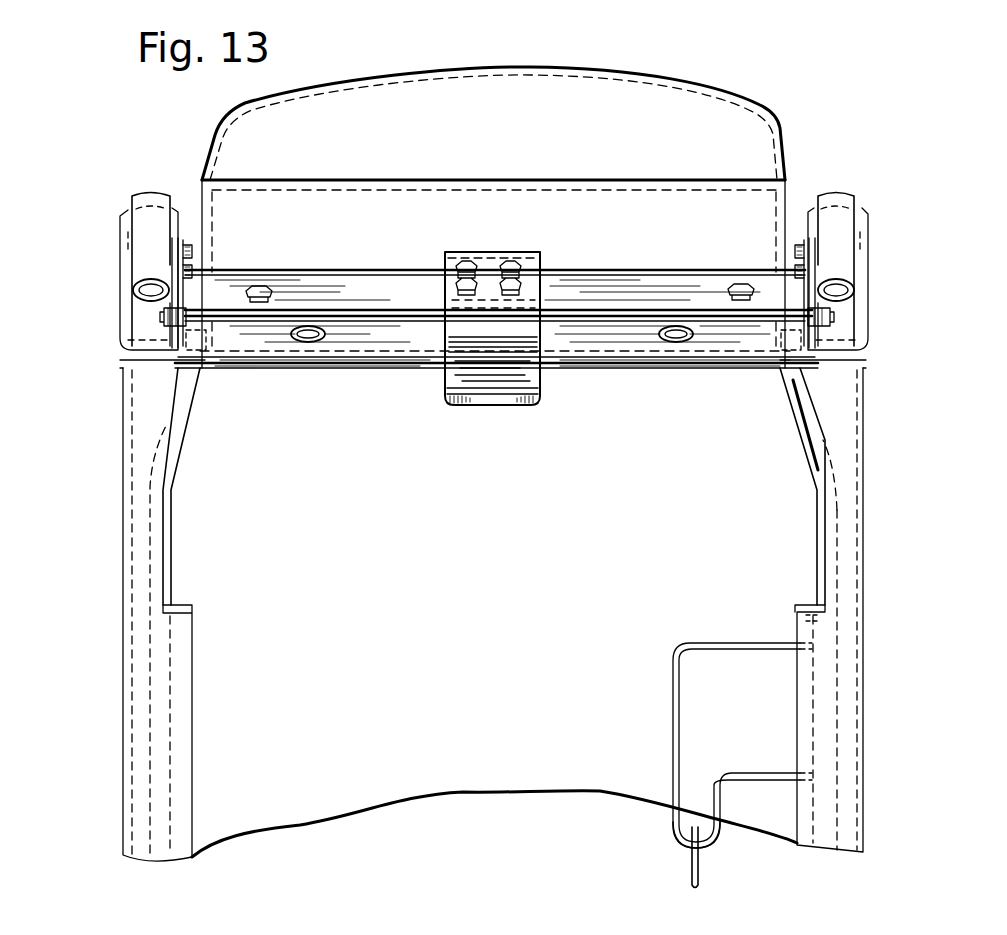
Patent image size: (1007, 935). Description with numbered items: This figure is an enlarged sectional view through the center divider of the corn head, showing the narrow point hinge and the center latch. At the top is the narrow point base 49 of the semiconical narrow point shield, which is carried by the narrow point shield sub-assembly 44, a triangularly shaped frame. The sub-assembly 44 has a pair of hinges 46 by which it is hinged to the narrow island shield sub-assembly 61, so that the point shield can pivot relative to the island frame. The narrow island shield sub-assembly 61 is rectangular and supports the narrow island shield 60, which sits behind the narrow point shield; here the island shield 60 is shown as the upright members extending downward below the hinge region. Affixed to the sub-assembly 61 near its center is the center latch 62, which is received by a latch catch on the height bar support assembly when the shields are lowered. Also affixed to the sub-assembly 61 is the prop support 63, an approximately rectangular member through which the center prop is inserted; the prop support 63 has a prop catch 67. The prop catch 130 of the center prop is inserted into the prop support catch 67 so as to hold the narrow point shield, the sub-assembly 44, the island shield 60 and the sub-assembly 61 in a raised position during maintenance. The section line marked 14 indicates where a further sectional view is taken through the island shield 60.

The narrow point base 49 is at (638, 73).
The narrow point shield sub-assembly 44 is at (146, 192).
The hinges 46 is at (160, 318).
The narrow island shield 60 is at (123, 485).
The narrow island shield sub-assembly 61 is at (193, 418).
The center latch 62 is at (485, 408).
The prop support 63 is at (716, 646).
The prop catch 67 is at (714, 838).
The prop catch 130 is at (690, 871).
The section line 14- 14 is at (263, 727).